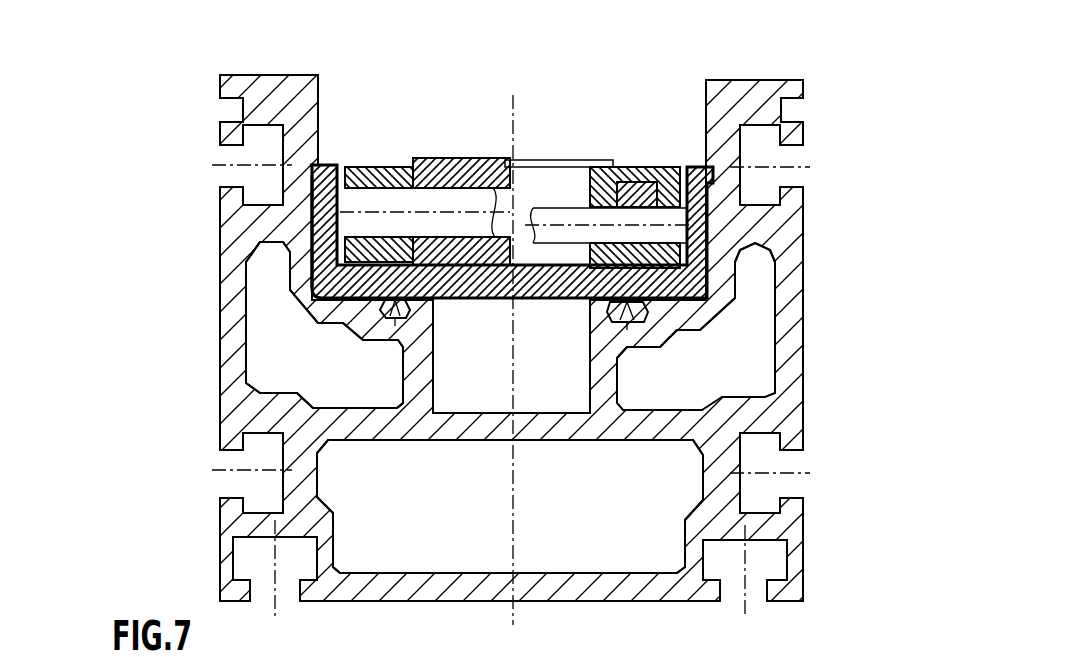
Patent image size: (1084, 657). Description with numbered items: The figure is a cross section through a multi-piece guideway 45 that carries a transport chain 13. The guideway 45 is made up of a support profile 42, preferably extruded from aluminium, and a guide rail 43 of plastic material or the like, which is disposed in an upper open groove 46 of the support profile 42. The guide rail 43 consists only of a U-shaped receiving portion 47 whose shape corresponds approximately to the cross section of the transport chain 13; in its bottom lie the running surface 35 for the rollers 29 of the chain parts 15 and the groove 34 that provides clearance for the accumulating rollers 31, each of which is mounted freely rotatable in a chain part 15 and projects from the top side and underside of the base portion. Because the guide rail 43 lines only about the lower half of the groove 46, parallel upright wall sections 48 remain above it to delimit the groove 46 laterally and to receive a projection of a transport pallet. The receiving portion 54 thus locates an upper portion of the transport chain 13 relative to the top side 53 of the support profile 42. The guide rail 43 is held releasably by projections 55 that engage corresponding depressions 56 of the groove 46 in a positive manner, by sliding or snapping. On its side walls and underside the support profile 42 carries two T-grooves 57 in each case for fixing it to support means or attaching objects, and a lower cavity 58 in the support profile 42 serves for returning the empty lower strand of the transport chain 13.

The transport chain 13 is at (566, 122).
The chain part 15 is at (386, 165).
The roller 29 is at (634, 190).
The accumulating roller 31 is at (450, 157).
The groove 34 is at (437, 338).
The running surface 35 is at (708, 285).
The support profile 42 is at (790, 342).
The guide rail 43 is at (557, 300).
The guideway 45 is at (845, 212).
The groove 46 is at (358, 122).
The receiving portion 47 is at (558, 436).
The wall section 48 is at (338, 108).
The top side 53 is at (246, 75).
The receiving portion 54 is at (312, 222).
The projection 55 is at (642, 318).
The depression 56 is at (738, 95).
The T-groove 57 is at (278, 146).
The lower cavity 58 is at (560, 528).